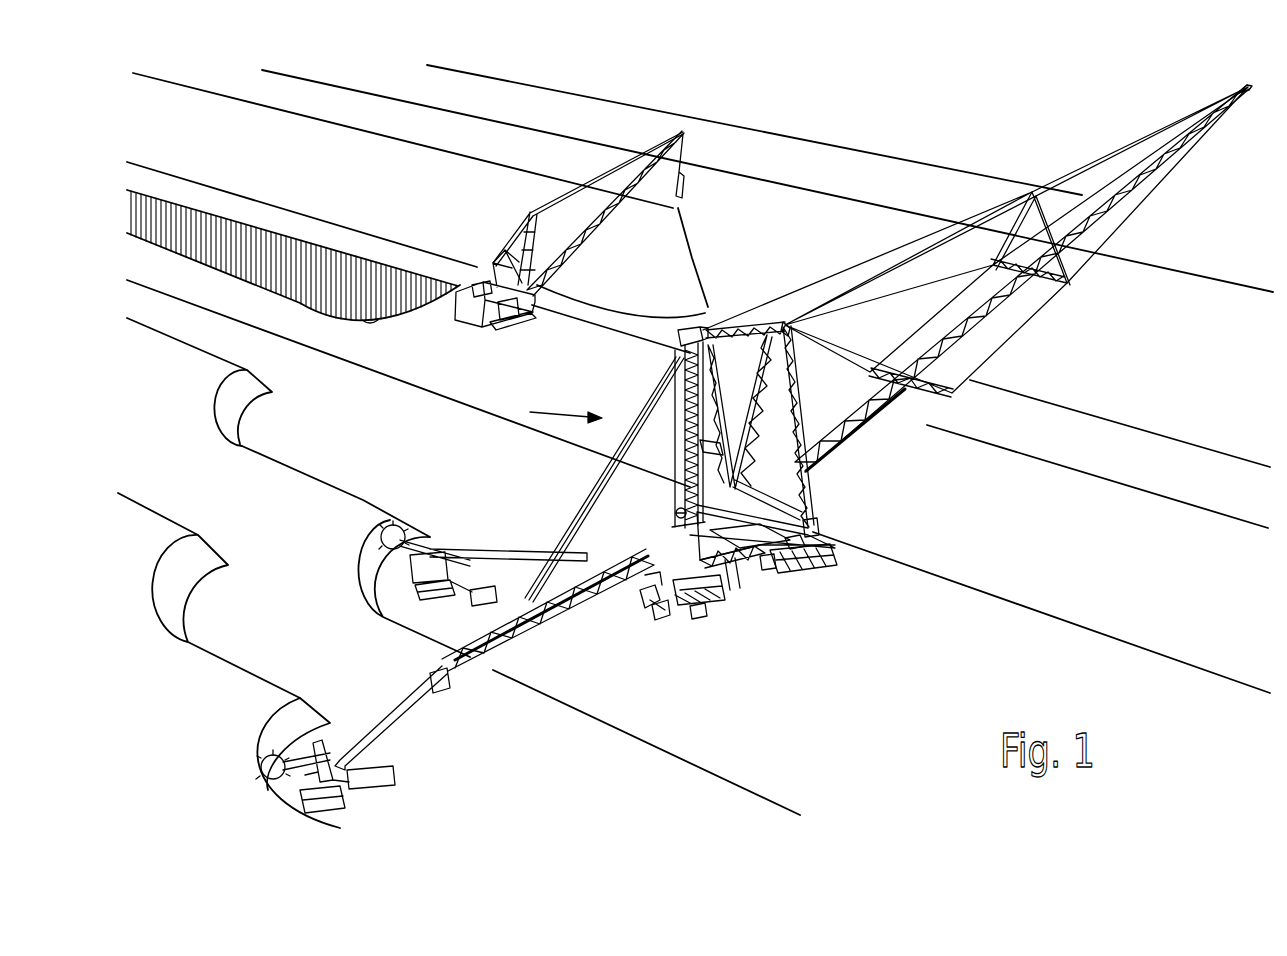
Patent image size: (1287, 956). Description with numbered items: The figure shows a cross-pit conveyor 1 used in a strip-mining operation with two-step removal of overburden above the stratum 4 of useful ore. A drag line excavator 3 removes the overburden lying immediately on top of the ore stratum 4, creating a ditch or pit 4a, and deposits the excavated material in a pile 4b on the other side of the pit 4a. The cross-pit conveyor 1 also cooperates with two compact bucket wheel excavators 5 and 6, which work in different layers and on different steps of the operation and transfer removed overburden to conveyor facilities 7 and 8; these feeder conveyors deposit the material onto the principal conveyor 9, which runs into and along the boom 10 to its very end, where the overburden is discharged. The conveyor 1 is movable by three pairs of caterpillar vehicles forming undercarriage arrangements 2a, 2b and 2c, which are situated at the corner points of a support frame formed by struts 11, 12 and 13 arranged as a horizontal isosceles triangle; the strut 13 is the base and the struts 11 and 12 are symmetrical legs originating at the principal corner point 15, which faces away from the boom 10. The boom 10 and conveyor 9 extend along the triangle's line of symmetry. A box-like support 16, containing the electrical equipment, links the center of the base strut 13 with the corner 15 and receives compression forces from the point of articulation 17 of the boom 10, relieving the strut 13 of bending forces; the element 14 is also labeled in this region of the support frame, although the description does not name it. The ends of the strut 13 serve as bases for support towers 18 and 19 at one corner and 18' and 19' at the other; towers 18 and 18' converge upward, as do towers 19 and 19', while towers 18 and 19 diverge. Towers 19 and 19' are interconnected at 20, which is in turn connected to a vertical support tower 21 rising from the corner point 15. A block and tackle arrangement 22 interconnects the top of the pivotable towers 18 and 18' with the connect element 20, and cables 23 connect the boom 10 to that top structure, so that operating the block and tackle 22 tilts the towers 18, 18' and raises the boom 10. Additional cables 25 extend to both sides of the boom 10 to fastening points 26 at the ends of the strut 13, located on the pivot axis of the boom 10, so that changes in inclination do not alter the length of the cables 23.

The cross-pit conveyor 1 is at (554, 408).
The undercarriage arrangement 2a is at (835, 558).
The undercarriage arrangement 2b is at (676, 513).
The undercarriage arrangement 2c is at (697, 612).
The drag line excavator 3 is at (468, 322).
The stratum of useful ore 4 is at (393, 265).
The ditch or pit 4a is at (372, 324).
The pile of removed overburden 4b is at (500, 186).
The compact bucket wheel excavator 5 is at (502, 550).
The compact bucket wheel excavator 6 is at (375, 790).
The conveyor facility 7 is at (527, 643).
The conveyor facility 8 is at (668, 602).
The principal conveyor 9 is at (878, 425).
The boom 10 is at (1137, 198).
The strut 11 is at (727, 570).
The strut 12 is at (733, 560).
The base strut 13 is at (792, 546).
The platform 14 is at (733, 532).
The principal corner point 15 is at (690, 602).
The box-like support 16 is at (773, 566).
The point of articulation 17 is at (836, 466).
The support tower 18 is at (809, 426).
The support tower 18' is at (778, 305).
The support tower 19 is at (755, 427).
The support tower 19' is at (669, 470).
The interconnect structure 20 is at (698, 326).
The vertical support strut and tower 21 is at (682, 407).
The block and tackle arrangement 22 is at (736, 324).
The cables 23 is at (880, 302).
The additional cables 25 is at (922, 329).
The fastening points 26 is at (812, 531).